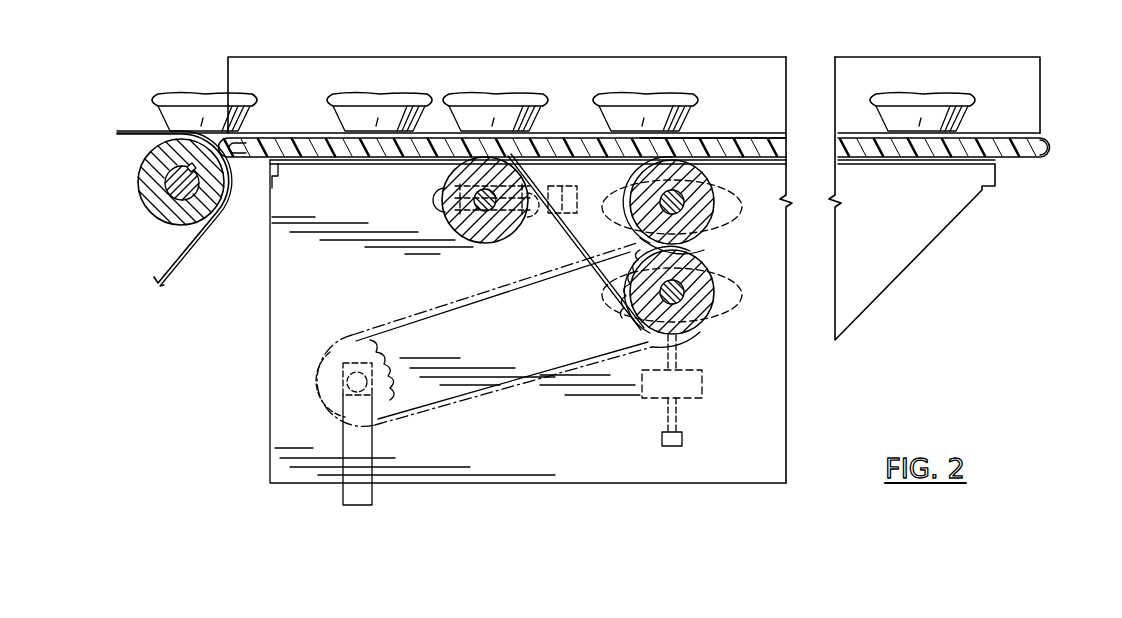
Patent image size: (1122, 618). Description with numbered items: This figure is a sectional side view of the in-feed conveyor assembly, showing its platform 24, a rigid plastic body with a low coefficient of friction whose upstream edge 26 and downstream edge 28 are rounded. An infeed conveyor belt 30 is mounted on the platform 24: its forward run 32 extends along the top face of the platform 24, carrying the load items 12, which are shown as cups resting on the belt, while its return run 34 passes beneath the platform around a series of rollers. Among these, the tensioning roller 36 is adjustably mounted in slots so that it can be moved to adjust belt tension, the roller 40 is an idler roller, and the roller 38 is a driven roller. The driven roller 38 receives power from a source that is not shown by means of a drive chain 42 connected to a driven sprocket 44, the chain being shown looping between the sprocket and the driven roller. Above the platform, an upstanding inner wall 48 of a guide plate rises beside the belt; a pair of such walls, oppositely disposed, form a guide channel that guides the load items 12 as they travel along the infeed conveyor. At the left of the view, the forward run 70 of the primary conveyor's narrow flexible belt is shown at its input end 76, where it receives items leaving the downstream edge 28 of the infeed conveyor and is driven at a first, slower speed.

The load items 12 is at (203, 112).
The platform 24 is at (751, 150).
The upstream edge 26 is at (1047, 156).
The downstream edge 28 is at (241, 159).
The infeed conveyor belt 30 is at (714, 151).
The forward run 32 is at (555, 134).
The return run 34 is at (348, 164).
The tensioning roller 36 is at (508, 223).
The driven roller 38 is at (718, 323).
The idler roller 40 is at (703, 218).
The drive chain 42 is at (450, 194).
The driven sprocket 44 is at (378, 400).
The upstanding inner wall 48 is at (387, 68).
The forward run 70 is at (122, 133).
The input end 76 is at (143, 140).